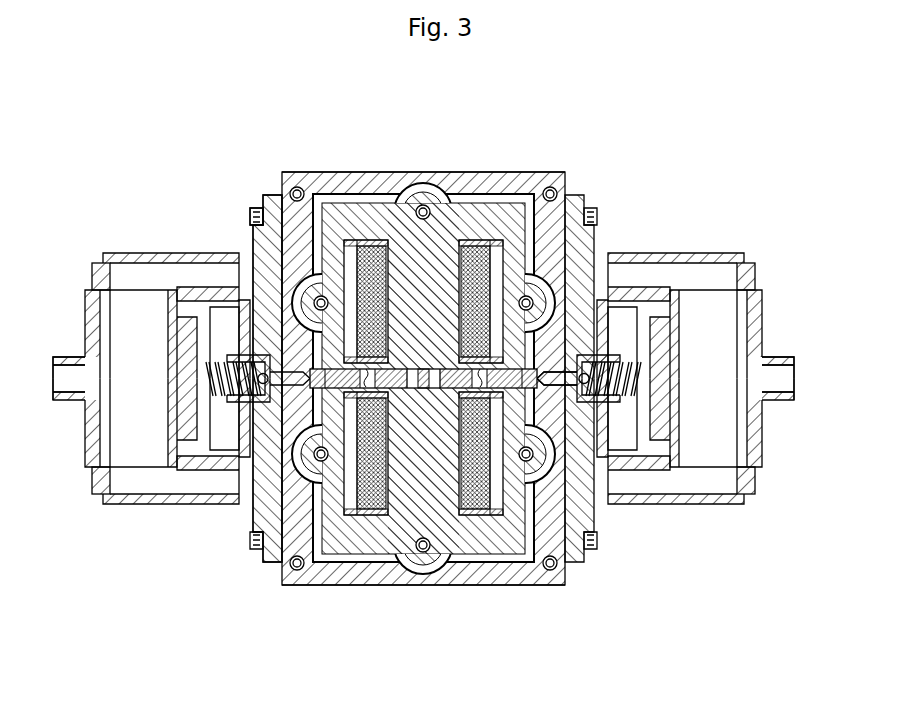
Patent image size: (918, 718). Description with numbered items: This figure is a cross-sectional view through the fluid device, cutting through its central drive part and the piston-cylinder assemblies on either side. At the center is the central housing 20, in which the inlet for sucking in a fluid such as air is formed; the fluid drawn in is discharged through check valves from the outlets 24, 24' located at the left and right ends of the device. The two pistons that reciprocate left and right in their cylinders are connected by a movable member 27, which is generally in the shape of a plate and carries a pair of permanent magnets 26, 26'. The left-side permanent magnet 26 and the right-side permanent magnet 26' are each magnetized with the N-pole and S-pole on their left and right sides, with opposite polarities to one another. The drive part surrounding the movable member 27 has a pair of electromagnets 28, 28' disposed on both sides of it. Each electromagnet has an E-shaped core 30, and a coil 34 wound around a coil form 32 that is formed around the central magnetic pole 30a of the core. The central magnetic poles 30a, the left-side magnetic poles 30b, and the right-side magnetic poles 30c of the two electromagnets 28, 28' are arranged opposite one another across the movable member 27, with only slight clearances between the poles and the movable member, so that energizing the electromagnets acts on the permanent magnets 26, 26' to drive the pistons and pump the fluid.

The central housing 20 is at (538, 578).
The outlet 24 is at (56, 359).
The outlet 24' is at (807, 388).
The permanent magnet 26 is at (239, 398).
The permanent magnet 26' is at (371, 514).
The movable member 27 is at (546, 372).
The electromagnet 28 is at (423, 119).
The electromagnet 28' is at (423, 644).
The E-shaped core 30 is at (513, 242).
The central magnetic pole 30a is at (438, 285).
The left-side magnetic pole 30b is at (252, 215).
The right-side magnetic pole 30c is at (515, 290).
The coil form 32 is at (497, 240).
The coil 34 is at (478, 243).